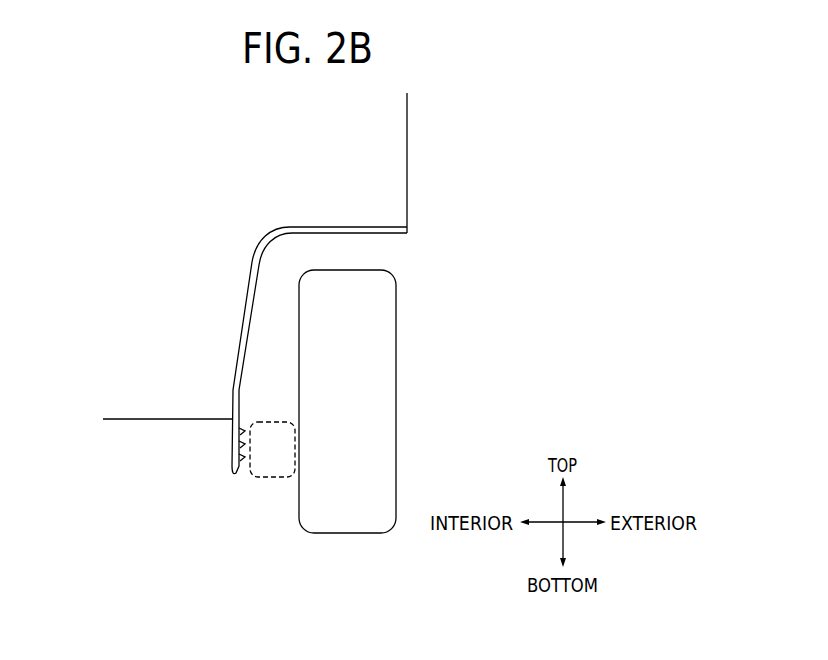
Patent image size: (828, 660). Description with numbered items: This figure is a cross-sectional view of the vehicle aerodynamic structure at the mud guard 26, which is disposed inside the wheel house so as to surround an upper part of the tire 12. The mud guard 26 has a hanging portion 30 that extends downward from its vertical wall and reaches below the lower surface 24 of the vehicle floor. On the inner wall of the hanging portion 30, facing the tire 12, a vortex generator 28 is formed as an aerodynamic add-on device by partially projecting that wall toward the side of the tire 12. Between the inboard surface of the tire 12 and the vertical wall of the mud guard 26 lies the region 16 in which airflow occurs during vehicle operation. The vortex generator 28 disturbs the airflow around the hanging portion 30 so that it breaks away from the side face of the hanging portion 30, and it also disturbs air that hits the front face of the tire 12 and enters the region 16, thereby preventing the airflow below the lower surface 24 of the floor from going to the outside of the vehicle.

The tire 12 is at (343, 534).
The region 16 is at (282, 482).
The lower surface of the vehicle floor 24 is at (124, 421).
The mud guard 26 is at (325, 226).
The vortex generator 28 is at (247, 478).
The hanging portion 30 is at (221, 425).